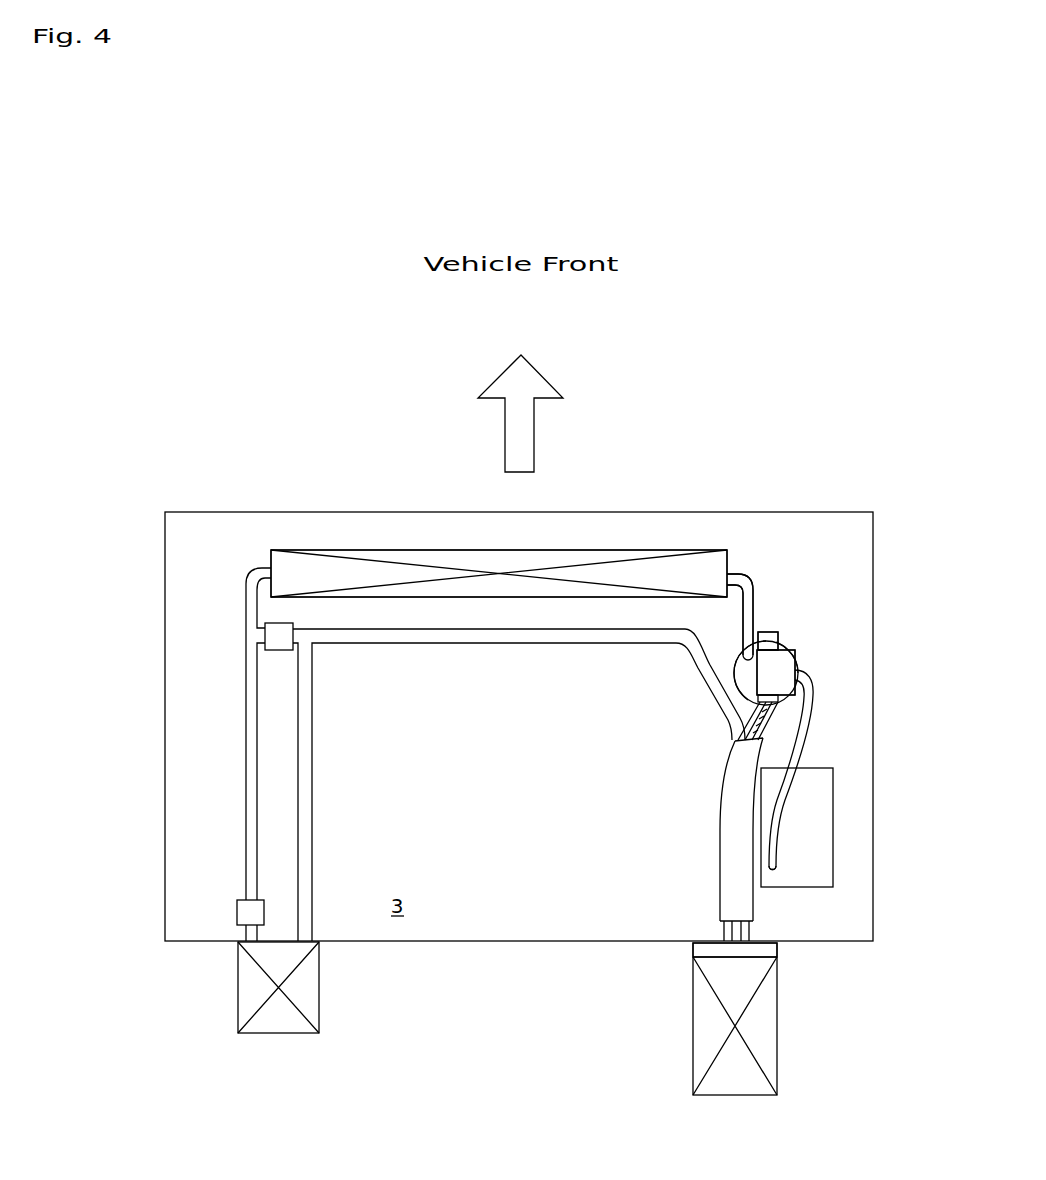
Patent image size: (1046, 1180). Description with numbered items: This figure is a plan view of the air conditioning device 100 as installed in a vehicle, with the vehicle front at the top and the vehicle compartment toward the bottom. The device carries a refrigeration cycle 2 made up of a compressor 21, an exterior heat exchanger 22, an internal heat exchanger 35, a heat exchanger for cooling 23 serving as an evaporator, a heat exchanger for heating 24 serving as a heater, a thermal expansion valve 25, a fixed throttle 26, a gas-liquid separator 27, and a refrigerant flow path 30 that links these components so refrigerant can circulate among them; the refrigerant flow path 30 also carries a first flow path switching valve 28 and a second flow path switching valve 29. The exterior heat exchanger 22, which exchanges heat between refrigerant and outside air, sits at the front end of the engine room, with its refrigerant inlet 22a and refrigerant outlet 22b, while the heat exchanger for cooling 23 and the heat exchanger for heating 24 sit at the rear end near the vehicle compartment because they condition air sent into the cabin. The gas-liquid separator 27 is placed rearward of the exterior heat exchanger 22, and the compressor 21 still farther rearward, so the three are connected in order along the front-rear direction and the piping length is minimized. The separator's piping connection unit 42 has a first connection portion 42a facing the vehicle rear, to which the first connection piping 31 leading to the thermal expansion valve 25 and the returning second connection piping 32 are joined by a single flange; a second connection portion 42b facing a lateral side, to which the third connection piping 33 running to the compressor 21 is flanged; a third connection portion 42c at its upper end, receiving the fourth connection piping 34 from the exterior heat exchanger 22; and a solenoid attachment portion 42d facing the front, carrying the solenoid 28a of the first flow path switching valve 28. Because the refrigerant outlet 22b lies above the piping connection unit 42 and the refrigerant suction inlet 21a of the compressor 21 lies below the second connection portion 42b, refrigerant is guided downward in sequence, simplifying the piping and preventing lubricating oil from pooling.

The air conditioning device 100 is at (856, 497).
The refrigeration cycle 2 is at (318, 543).
The exterior heat exchanger 22 is at (434, 549).
The refrigerant inlet 22a is at (264, 553).
The refrigerant outlet 22b is at (738, 549).
The fourth connection piping 34 is at (745, 580).
The second flow path switching valve 29 is at (277, 640).
The refrigerant flow path 30 is at (417, 651).
The fixed throttle 26 is at (250, 913).
The heat exchanger for heating 24 is at (277, 1020).
The heat exchanger for cooling 23 is at (735, 1070).
The thermal expansion valve 25 is at (758, 948).
The piping connection unit 42 is at (733, 657).
The first connection portion 42a is at (737, 708).
The second connection portion 42b is at (797, 657).
The third connection portion 42c is at (745, 672).
The solenoid attachment portion 42d is at (797, 640).
The first flow path switching valve 28 is at (785, 630).
The solenoid 28a is at (768, 631).
The gas-liquid separator 27 is at (802, 653).
The first connection piping 31 is at (790, 699).
The second connection piping 32 is at (768, 723).
The third connection piping 33 is at (795, 742).
The internal heat exchanger 35 is at (737, 843).
The compressor 21 is at (820, 875).
The refrigerant suction inlet 21a is at (770, 882).